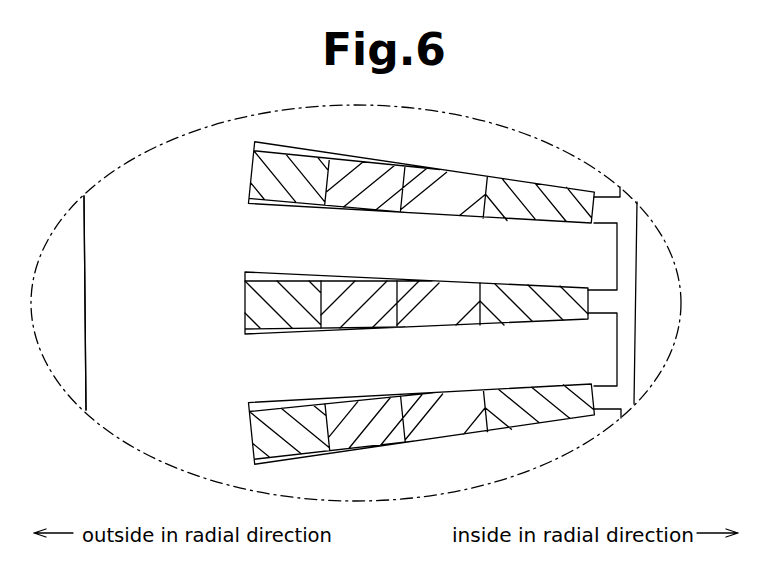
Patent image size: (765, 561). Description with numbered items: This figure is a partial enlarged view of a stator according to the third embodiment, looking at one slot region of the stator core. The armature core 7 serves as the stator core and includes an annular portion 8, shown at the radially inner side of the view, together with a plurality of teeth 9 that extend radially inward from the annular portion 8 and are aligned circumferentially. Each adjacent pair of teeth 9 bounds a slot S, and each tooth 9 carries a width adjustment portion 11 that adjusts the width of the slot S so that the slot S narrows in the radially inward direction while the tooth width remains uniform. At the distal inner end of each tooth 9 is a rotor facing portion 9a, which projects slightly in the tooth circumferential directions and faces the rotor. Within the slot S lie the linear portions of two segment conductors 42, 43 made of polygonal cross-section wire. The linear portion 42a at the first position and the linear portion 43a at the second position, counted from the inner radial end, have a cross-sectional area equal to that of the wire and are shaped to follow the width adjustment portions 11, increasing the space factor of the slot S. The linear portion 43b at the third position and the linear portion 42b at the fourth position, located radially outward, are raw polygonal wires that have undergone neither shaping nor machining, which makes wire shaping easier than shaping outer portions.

The armature core 7 is at (83, 279).
The annular portion 8 is at (92, 318).
The tooth 9 is at (436, 230).
The rotor facing portion 9a is at (603, 296).
The width adjustment portion 11 is at (420, 288).
The segment conductor 42 is at (416, 313).
The linear portion 42a is at (545, 323).
The linear portion 42b is at (275, 329).
The segment conductor 43 is at (411, 310).
The linear portion 43a is at (447, 325).
The linear portion 43b is at (352, 330).
The slot S is at (450, 283).